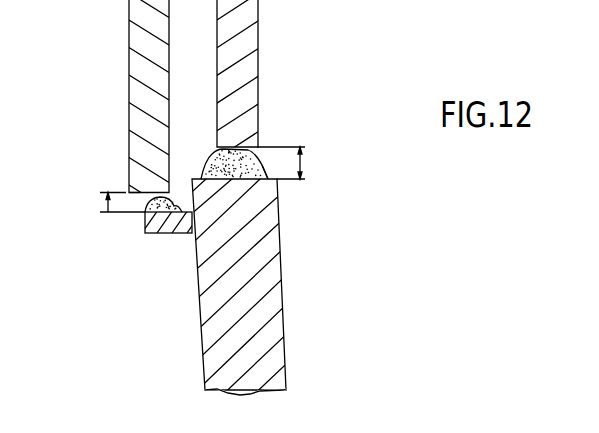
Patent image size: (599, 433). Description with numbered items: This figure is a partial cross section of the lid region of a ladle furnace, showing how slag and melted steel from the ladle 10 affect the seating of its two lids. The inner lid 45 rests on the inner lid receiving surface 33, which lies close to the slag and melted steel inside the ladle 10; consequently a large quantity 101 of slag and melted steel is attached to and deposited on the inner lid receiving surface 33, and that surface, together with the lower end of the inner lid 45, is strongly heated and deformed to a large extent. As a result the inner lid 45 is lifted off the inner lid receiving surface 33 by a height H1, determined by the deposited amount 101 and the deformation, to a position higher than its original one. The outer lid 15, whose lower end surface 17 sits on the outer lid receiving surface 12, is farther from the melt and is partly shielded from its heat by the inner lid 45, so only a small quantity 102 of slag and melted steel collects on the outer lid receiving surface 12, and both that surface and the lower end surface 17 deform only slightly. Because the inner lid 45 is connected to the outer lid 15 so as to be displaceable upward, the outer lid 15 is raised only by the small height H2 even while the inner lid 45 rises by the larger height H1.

The ladle 10 is at (275, 333).
The outer lid receiving surface 12 is at (175, 226).
The outer lid 15 is at (137, 42).
The lower end surface of the outer lid 17 is at (137, 194).
The inner lid receiving surface 33 is at (264, 176).
The inner lid 45 is at (258, 14).
The quantity of slag and melted steel on the inner lid receiving surface 101 is at (248, 148).
The quantity of slag and melted steel on the outer lid receiving surface 102 is at (146, 222).
The raised height of the inner lid H1 is at (302, 160).
The raised height of the outer lid H2 is at (102, 206).